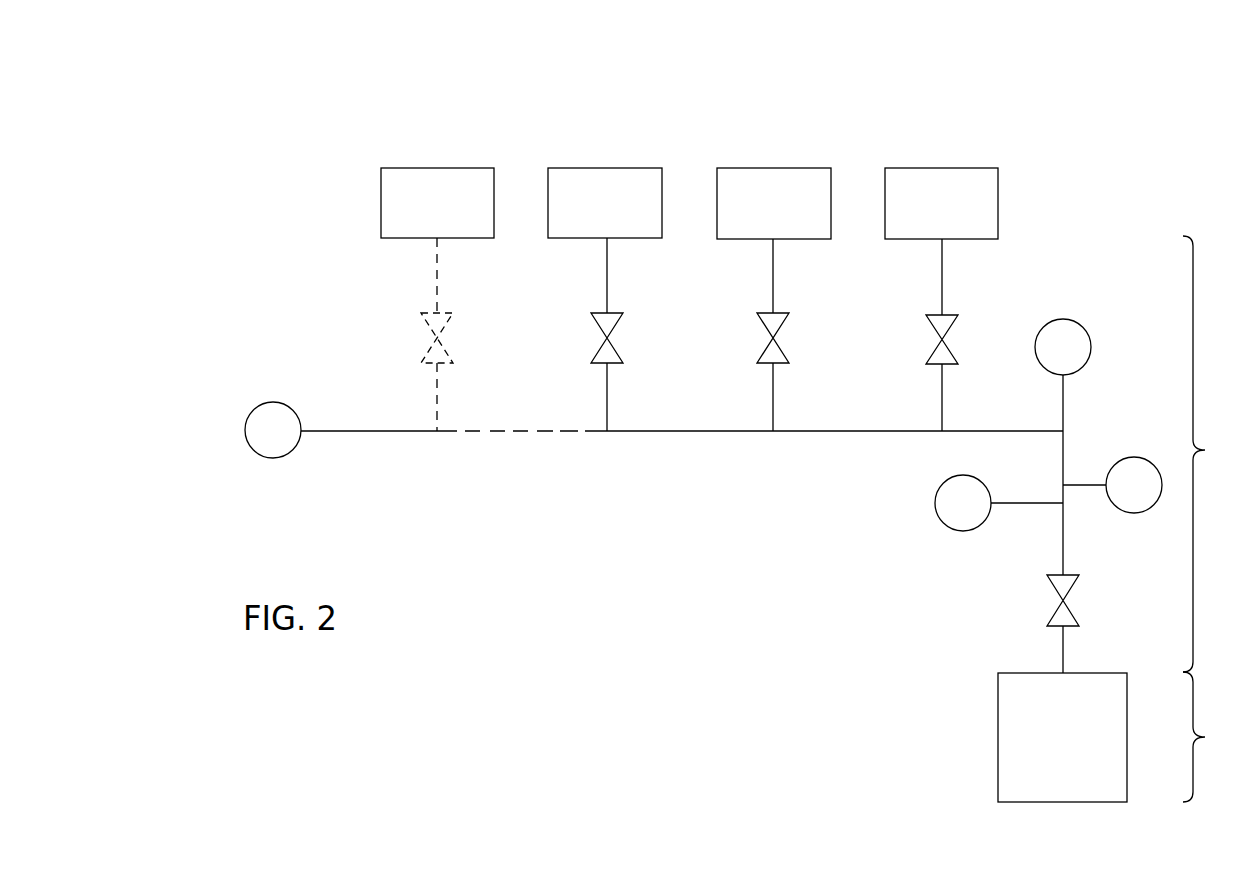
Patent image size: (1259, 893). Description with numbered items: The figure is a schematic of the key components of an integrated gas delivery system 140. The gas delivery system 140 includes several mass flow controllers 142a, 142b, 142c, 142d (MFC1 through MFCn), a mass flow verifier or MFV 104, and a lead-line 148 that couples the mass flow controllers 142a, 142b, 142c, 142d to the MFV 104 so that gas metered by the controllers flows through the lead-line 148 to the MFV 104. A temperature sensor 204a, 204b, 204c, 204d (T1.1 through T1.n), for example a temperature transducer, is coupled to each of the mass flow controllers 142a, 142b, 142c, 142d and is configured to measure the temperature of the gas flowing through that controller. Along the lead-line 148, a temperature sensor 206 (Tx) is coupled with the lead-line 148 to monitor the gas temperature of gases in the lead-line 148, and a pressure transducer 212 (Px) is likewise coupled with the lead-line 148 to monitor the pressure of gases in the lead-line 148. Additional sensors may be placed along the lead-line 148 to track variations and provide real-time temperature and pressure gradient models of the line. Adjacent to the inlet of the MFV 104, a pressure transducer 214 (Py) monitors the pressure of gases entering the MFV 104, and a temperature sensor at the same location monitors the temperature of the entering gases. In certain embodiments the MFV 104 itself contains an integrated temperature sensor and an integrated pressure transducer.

The gas delivery system 140 is at (300, 118).
The temperature sensor 204a is at (440, 135).
The temperature sensor 204b is at (608, 135).
The temperature sensor 204c is at (780, 133).
The temperature sensor 204d is at (945, 133).
The mass flow controller 142a is at (467, 240).
The mass flow controller 142b is at (633, 240).
The mass flow controller 142c is at (800, 240).
The mass flow controller 142d is at (968, 240).
The pressure transducer 212 is at (262, 403).
The temperature sensor 206 is at (1068, 318).
The lead-line 148 is at (1060, 460).
The pressure transducer 214 is at (935, 498).
The MFV 104 is at (998, 713).